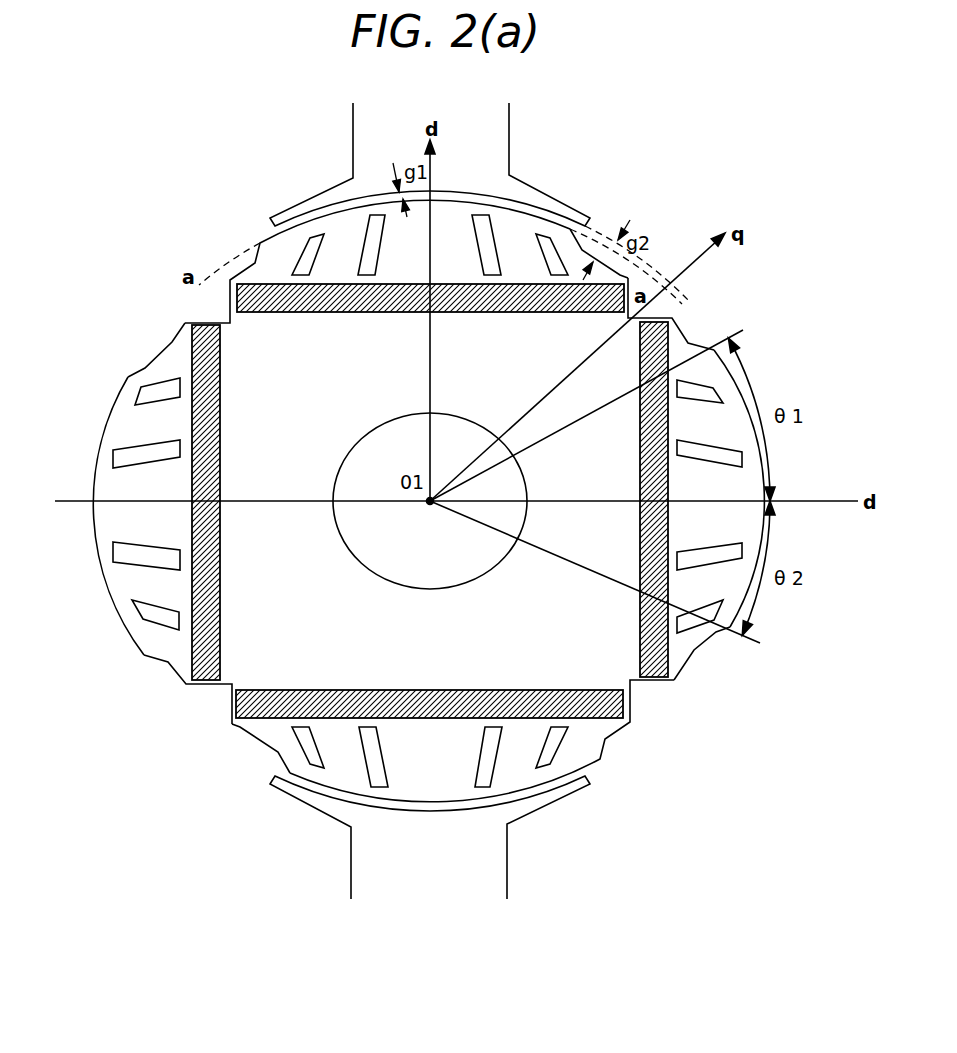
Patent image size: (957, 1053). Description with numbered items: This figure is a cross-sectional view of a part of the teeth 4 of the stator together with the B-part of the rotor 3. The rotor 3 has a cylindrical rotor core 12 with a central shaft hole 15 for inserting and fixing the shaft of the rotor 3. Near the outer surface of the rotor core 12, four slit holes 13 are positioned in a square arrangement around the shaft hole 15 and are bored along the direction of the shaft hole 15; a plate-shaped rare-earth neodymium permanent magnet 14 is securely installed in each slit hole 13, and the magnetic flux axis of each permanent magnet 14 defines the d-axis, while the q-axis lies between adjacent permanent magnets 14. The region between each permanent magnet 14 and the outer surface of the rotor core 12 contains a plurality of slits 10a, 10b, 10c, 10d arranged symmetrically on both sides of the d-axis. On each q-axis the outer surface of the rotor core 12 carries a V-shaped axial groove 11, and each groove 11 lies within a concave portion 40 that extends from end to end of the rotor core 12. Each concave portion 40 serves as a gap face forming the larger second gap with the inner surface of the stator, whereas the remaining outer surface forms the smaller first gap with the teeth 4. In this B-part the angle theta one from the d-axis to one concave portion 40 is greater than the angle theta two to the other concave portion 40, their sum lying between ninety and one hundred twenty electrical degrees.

The rotor 3 is at (630, 280).
The teeth 4 is at (492, 133).
The slit 10a is at (311, 238).
The slit 10b is at (548, 242).
The slit 10c is at (380, 222).
The slit 10d is at (480, 230).
The groove 11 is at (227, 307).
The rotor core 12 is at (105, 442).
The slit hole 13 is at (318, 314).
The permanent magnet 14 is at (243, 300).
The shaft hole 15 is at (350, 485).
The concave portion 40 is at (590, 236).